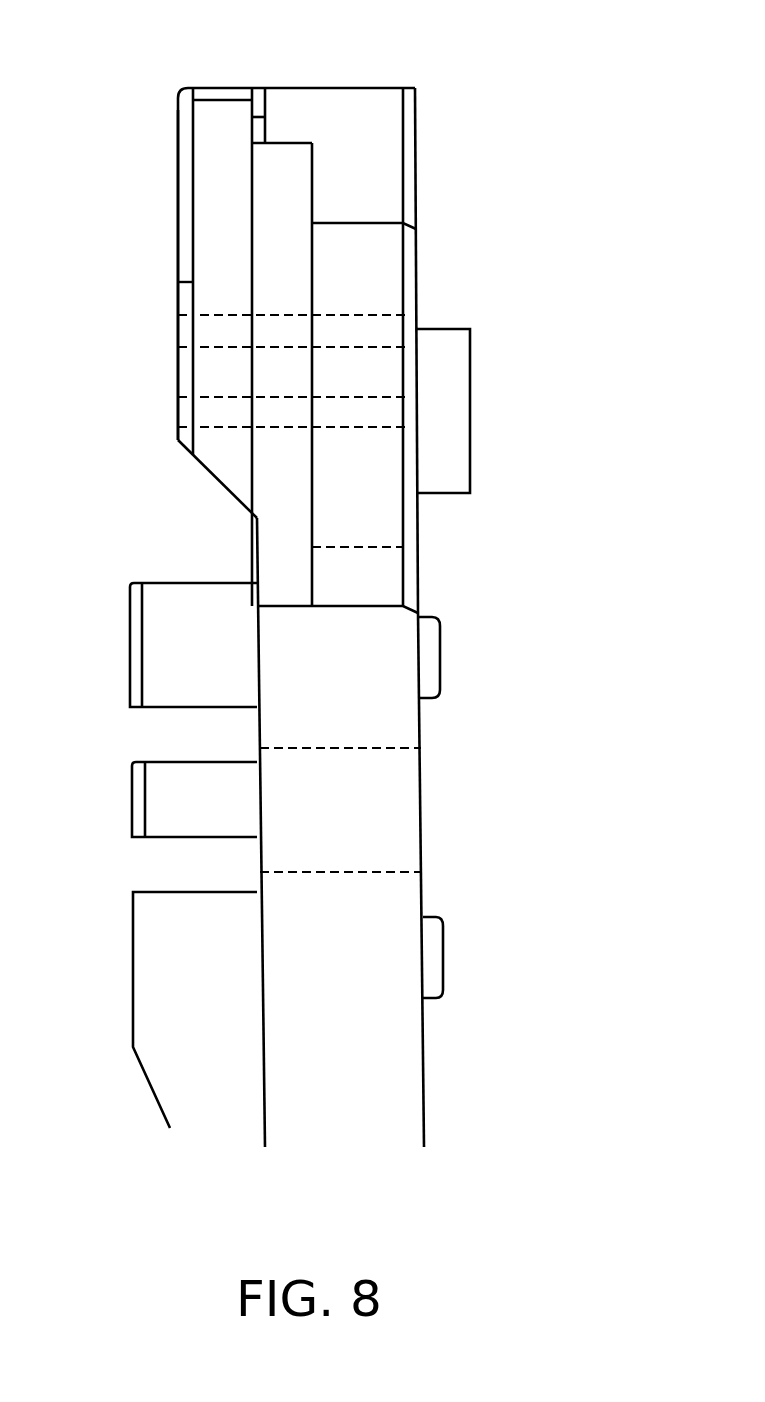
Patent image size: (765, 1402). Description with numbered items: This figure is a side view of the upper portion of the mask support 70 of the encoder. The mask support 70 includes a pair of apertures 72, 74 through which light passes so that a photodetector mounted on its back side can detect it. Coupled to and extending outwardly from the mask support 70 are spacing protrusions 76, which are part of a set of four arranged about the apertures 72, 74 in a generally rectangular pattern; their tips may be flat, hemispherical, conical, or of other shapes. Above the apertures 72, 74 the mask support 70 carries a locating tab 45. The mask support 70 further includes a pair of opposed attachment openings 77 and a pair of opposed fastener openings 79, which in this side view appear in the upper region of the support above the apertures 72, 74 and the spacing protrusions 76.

The mask support 70 is at (355, 90).
The attachment openings 77 is at (203, 372).
The fastener openings 79 is at (417, 327).
The locating tab 45 is at (470, 385).
The aperture 72 is at (348, 832).
The aperture 74 is at (428, 803).
The spacing protrusions 76 is at (436, 672).